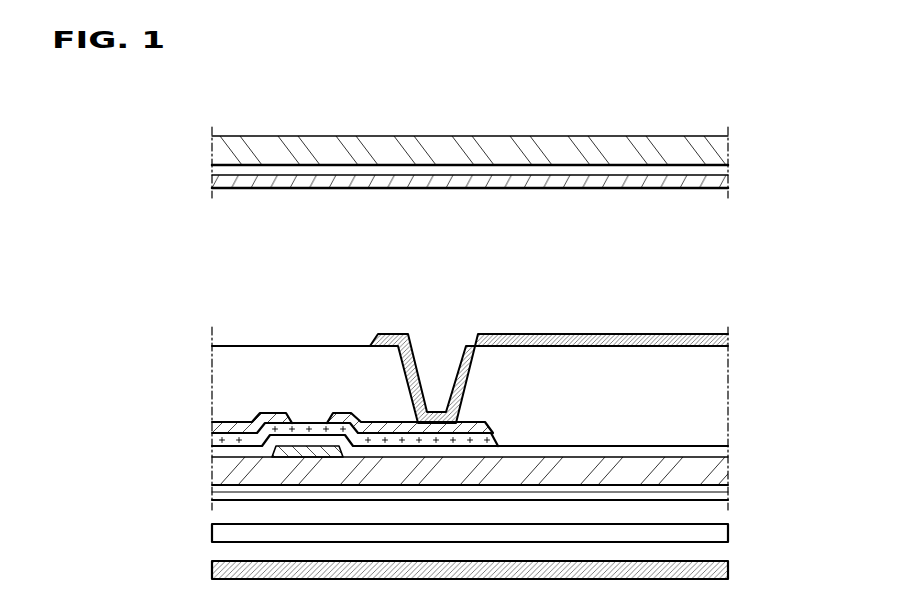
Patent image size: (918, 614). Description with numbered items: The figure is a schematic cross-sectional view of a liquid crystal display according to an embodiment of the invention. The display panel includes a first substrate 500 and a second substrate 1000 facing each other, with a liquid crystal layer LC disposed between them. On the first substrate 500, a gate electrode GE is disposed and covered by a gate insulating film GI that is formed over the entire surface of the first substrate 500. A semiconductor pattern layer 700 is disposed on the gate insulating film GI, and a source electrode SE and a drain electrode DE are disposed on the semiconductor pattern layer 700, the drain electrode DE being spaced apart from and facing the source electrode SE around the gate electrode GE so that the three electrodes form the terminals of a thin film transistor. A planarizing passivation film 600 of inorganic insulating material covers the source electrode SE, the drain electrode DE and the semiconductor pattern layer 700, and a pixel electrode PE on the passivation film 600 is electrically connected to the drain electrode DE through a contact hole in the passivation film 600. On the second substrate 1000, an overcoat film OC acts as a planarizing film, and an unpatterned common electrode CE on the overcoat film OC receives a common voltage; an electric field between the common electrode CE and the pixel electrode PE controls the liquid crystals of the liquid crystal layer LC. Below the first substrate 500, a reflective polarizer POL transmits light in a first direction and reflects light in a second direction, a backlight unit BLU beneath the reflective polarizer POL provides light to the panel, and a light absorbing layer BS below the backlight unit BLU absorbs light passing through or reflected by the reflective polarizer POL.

The second substrate 1000 is at (694, 146).
The overcoat film OC is at (716, 167).
The common electrode CE is at (695, 183).
The liquid crystal layer LC is at (470, 261).
The pixel electrode PE is at (720, 343).
The passivation film 600 is at (717, 411).
The source electrode SE is at (233, 432).
The drain electrode DE is at (398, 423).
The semiconductor pattern layer 700 is at (228, 443).
The gate electrode GE is at (310, 452).
The gate insulating film GI is at (717, 452).
The first substrate 500 is at (228, 475).
The reflective polarizer POL is at (722, 491).
The backlight unit BLU is at (722, 532).
The light absorbing layer BS is at (723, 570).